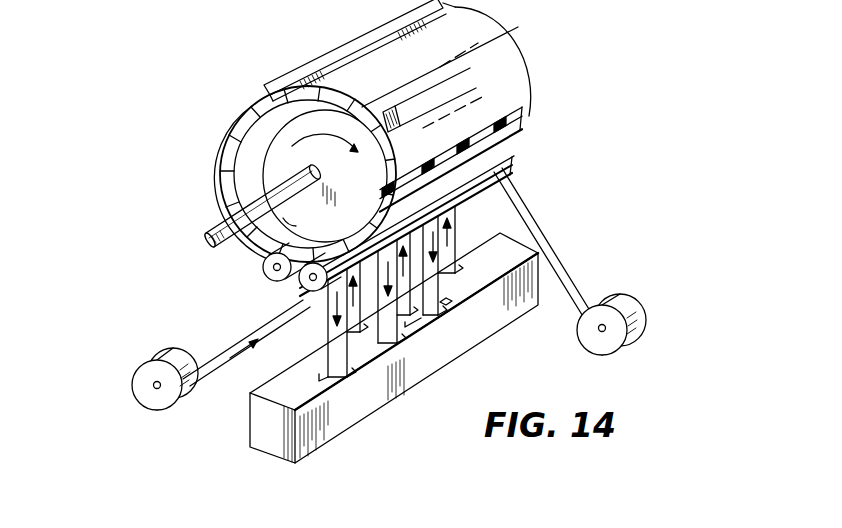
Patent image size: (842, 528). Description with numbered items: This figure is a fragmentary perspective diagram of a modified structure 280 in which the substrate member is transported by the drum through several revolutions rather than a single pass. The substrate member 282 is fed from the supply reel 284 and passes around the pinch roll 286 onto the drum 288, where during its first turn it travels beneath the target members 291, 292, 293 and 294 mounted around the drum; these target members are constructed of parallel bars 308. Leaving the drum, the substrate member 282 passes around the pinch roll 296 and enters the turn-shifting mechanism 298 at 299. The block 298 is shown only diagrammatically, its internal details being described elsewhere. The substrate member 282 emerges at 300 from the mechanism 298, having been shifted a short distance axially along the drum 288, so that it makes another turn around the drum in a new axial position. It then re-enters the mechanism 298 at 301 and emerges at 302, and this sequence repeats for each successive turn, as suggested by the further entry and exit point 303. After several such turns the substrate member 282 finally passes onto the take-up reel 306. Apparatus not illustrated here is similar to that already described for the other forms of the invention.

The structure 280 is at (576, 94).
The substrate member 282 is at (234, 331).
The supply reel 284 is at (146, 361).
The pinch roll 286 is at (263, 271).
The drum 288 is at (257, 143).
The target member 291 is at (241, 243).
The target member 292 is at (246, 99).
The target member 293 is at (502, 70).
The target member 294 is at (514, 137).
The pinch roll 296 is at (317, 291).
The turn-shifting mechanism 298 is at (335, 428).
The entry point 299 is at (330, 360).
The exit point 300 is at (360, 334).
The entry point 301 is at (400, 338).
The exit point 302 is at (412, 318).
The air duct 303 is at (446, 301).
The take-up reel 306 is at (643, 297).
The parallel bars 308 is at (388, 110).